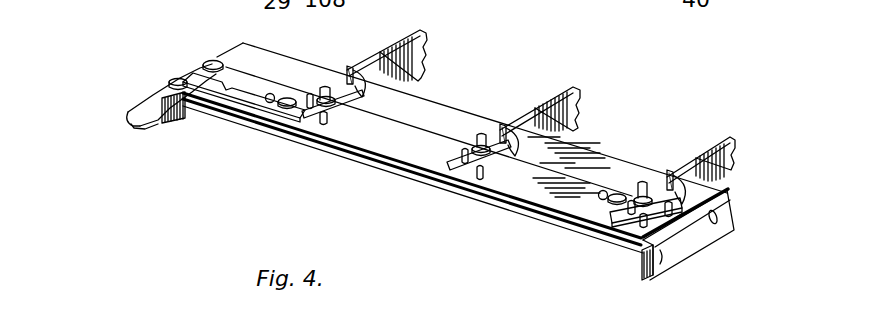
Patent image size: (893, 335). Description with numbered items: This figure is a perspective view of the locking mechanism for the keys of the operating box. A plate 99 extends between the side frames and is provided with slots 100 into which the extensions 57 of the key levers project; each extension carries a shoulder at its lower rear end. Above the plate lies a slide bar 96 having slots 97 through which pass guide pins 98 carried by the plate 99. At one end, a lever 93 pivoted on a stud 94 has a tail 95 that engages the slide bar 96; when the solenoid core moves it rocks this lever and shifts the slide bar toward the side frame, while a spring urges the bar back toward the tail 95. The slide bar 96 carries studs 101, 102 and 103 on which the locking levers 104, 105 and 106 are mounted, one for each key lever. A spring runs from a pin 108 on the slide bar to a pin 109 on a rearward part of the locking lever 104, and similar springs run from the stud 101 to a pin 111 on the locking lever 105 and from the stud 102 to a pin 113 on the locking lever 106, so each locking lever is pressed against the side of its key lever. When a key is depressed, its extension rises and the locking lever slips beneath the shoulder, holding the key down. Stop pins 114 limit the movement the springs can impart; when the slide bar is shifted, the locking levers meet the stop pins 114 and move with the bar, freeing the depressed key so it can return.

The extension 57 is at (415, 60).
The lever 93 is at (147, 102).
The stud 94 is at (176, 77).
The tail 95 is at (208, 60).
The slide bar 96 is at (248, 100).
The slots 97 is at (270, 103).
The guide pins 98 is at (285, 107).
The plate 99 is at (602, 156).
The slots 100 is at (731, 197).
The stud 101 is at (645, 182).
The stud 102 is at (482, 132).
The stud 103 is at (327, 86).
The locking lever 104 is at (659, 183).
The locking lever 105 is at (498, 130).
The locking lever 106 is at (342, 84).
The pin 108 is at (690, 228).
The pin 109 is at (619, 223).
The pin 111 is at (465, 166).
The pin 113 is at (309, 108).
The stop pins 114 is at (325, 124).